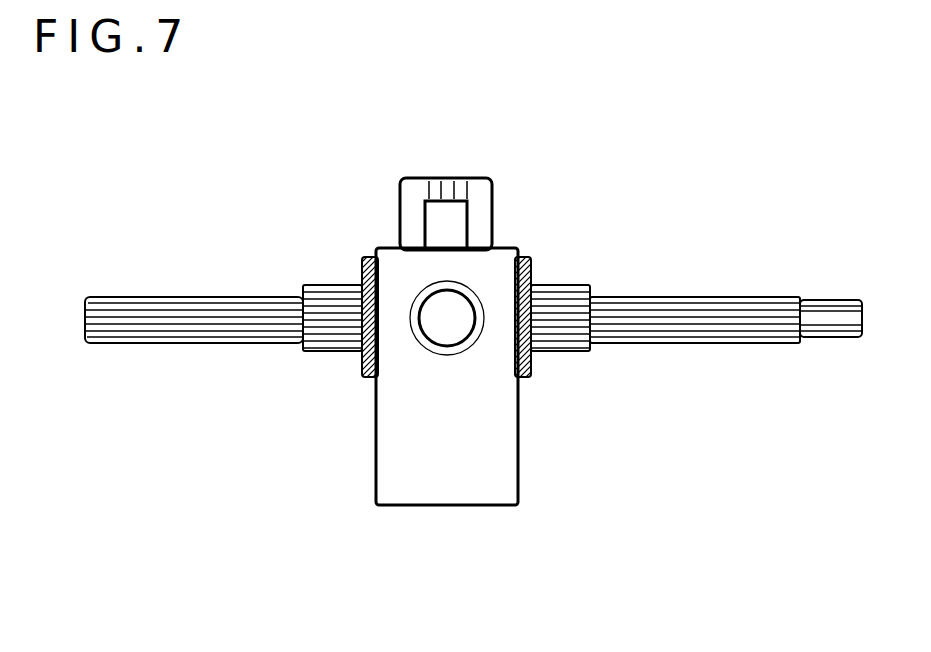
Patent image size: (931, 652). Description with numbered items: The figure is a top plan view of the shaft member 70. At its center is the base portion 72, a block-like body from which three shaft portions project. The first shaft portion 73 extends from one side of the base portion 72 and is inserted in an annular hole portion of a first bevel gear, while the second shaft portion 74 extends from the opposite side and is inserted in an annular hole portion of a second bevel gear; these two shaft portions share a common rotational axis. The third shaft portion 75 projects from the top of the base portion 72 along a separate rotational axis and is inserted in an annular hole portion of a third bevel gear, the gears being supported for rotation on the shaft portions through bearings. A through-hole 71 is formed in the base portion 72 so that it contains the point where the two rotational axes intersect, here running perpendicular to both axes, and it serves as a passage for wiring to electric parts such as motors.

The shaft member 70 is at (462, 644).
The through-hole 71 is at (472, 291).
The base portion 72 is at (505, 463).
The first shaft portion 73 is at (773, 322).
The second shaft portion 74 is at (131, 322).
The third shaft portion 75 is at (476, 179).